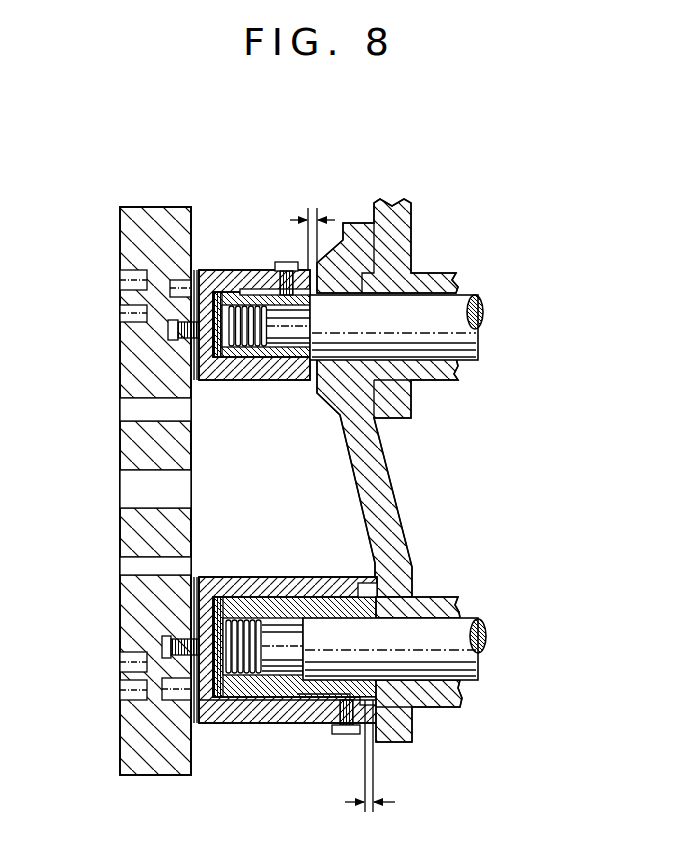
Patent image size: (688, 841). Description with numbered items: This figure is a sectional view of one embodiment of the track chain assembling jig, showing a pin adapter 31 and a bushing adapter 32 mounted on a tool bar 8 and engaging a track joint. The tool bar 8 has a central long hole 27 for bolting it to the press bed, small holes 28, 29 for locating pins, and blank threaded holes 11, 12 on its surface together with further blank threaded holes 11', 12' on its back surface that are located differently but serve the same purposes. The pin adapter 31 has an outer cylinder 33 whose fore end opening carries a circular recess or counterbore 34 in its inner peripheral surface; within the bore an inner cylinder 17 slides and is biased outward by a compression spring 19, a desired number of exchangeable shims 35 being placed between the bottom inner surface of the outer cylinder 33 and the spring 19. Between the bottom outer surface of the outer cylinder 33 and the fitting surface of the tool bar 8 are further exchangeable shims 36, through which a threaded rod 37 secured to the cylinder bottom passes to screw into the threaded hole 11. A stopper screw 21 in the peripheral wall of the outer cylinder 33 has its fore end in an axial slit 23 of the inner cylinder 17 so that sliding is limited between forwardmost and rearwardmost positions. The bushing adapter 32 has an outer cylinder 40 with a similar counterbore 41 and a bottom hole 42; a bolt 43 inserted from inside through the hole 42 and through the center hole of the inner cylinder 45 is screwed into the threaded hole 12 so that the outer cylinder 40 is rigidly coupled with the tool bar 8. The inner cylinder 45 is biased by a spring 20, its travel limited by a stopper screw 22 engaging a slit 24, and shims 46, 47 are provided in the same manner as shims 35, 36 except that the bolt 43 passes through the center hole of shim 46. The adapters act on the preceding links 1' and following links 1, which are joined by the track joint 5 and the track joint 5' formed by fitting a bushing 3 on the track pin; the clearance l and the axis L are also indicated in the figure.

The following link 1 is at (414, 503).
The preceding link 1' is at (393, 246).
The bushing 3 is at (437, 376).
The track joint 5 is at (462, 664).
The track joint 5' is at (523, 279).
The tool bar 8 is at (158, 215).
The threaded hole 11 is at (140, 329).
The blank threaded hole 11' is at (100, 296).
The threaded hole 12 is at (156, 630).
The blank threaded hole 12' is at (120, 676).
The inner cylinder 17 is at (253, 380).
The compression spring 19 is at (238, 352).
The spring 20 is at (248, 697).
The stopper screw 21 is at (284, 264).
The stopper screw 22 is at (348, 735).
The slit 23 is at (258, 291).
The slit 24 is at (310, 703).
The long hole 27 is at (137, 492).
The small hole 28 is at (137, 412).
The small hole 29 is at (137, 570).
The pin adapter 31 is at (205, 265).
The bushing adapter 32 is at (212, 573).
The outer cylinder 33 is at (280, 383).
The counterbore 34 is at (314, 382).
The shim 35 is at (219, 290).
The shim 36 is at (192, 272).
The threaded rod 37 is at (168, 330).
The outer cylinder 40 is at (283, 588).
The counterbore 41 is at (362, 588).
The hole 42 is at (200, 725).
The bolt 43 is at (232, 600).
The inner cylinder 45 is at (322, 595).
The shim 46 is at (218, 722).
The shim 47 is at (196, 705).
The clearance l is at (312, 212).
The axis L is at (370, 768).